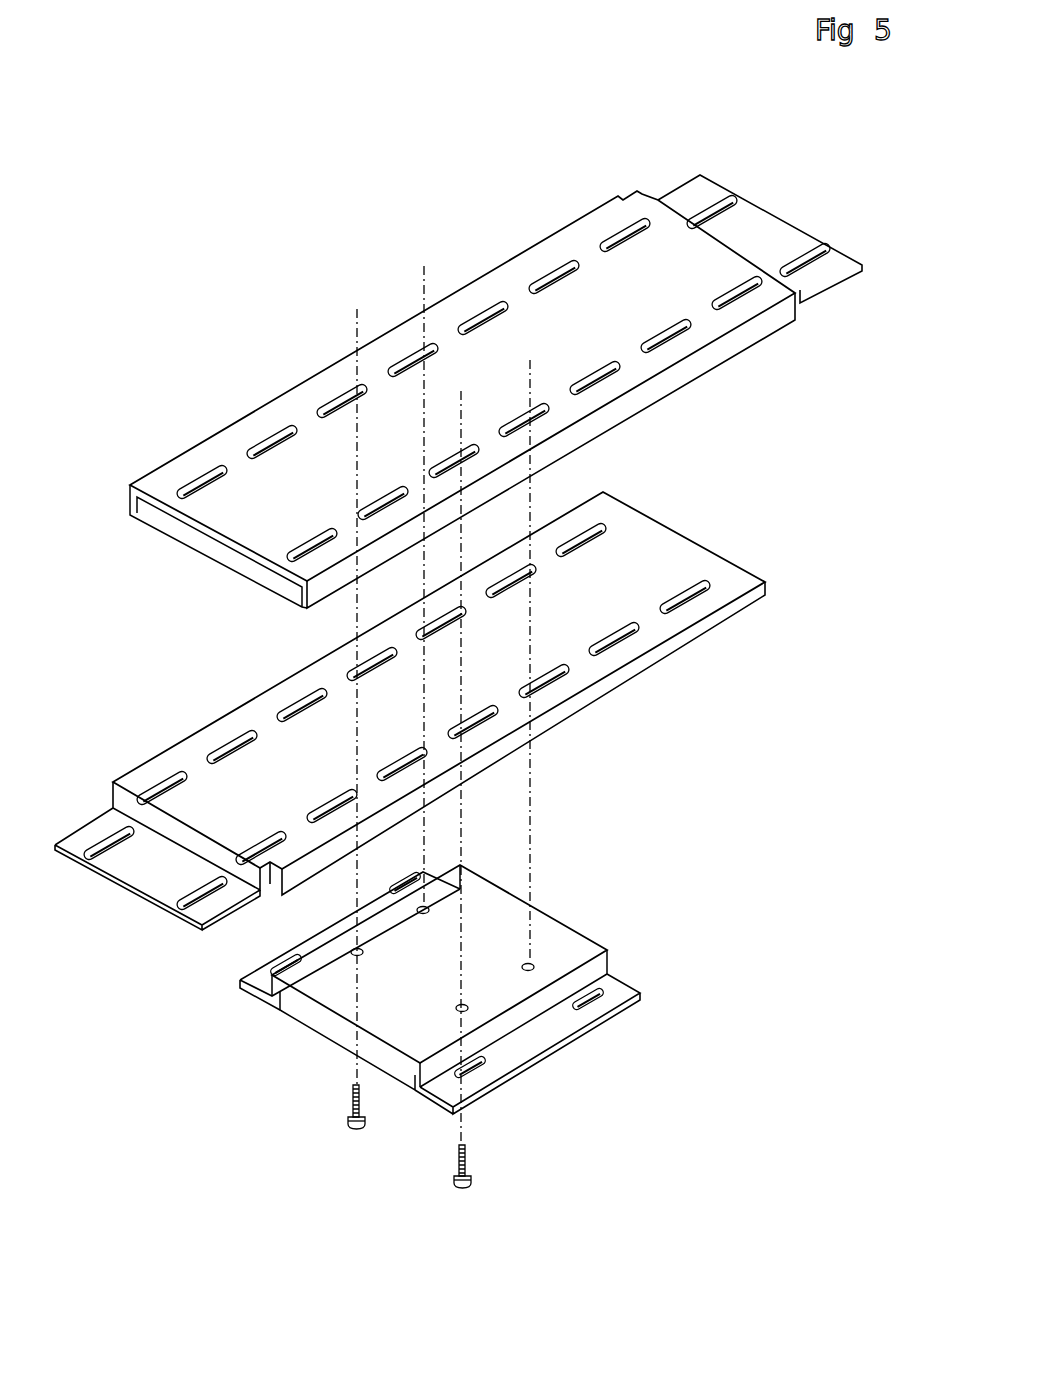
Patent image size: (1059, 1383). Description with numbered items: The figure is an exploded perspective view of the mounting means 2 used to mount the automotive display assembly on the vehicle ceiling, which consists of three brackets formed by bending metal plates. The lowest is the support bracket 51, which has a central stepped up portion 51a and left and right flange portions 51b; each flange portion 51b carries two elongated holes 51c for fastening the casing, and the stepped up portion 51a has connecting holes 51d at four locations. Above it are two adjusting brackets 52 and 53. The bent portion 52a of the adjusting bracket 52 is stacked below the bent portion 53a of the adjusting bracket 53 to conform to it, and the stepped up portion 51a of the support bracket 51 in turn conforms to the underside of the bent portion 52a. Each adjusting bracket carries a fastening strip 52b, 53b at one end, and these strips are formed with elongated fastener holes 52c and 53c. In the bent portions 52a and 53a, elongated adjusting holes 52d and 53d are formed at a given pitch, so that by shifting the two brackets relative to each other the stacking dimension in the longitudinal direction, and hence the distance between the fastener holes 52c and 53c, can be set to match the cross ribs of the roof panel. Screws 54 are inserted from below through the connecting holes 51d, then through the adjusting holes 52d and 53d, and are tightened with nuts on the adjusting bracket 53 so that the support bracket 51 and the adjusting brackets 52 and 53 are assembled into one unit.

The mounting means 2 is at (766, 674).
The support bracket 51 is at (557, 928).
The stepped up portion 51a is at (325, 985).
The flange portions 51b is at (247, 983).
The elongated holes 51c is at (285, 963).
The connecting holes 51d is at (523, 962).
The adjusting bracket 52 is at (593, 690).
The bent portion 52a is at (670, 557).
The fastening strip 52b is at (147, 878).
The elongated fastener holes 52c is at (197, 887).
The elongated adjusting holes 52d is at (613, 633).
The adjusting bracket 53 is at (690, 373).
The bent portion 53a is at (242, 517).
The fastening strip 53b is at (766, 215).
The elongated fastener holes 53c is at (712, 205).
The elongated adjusting holes 53d is at (587, 368).
The screws 54 is at (357, 1130).